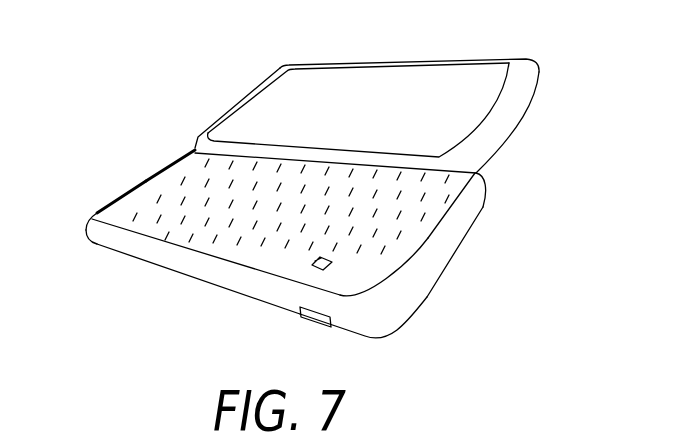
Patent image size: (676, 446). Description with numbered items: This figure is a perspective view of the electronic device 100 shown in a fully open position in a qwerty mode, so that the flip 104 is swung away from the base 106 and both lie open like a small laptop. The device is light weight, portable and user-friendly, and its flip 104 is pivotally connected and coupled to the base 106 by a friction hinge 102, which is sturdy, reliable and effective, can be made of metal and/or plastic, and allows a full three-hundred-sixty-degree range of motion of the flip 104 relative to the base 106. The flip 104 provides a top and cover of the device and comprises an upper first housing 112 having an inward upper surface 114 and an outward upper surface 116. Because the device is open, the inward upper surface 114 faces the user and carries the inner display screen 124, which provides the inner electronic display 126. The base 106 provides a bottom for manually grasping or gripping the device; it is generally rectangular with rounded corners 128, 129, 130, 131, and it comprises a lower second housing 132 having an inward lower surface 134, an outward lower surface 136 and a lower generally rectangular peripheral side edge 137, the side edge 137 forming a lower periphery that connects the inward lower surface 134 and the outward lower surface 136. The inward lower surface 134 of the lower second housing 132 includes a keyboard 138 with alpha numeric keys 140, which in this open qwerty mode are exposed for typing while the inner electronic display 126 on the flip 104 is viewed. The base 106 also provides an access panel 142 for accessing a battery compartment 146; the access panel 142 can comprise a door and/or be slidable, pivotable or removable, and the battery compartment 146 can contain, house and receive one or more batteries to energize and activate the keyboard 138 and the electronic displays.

The electronic device 100 is at (158, 45).
The friction hinge 102 is at (476, 173).
The flip 104 is at (443, 60).
The base 106 is at (120, 201).
The upper first housing 112 is at (279, 71).
The inward upper surface 114 is at (240, 97).
The outward upper surface 116 is at (526, 85).
The inner display screen 124 is at (353, 63).
The inner electronic display 126 is at (463, 118).
The rounded corner 128 is at (90, 226).
The rounded corner 129 is at (379, 336).
The rounded corner 130 is at (486, 191).
The rounded corner 131 is at (188, 152).
The lower second housing 132 is at (145, 263).
The inward lower surface 134 is at (393, 258).
The outward lower surface 136 is at (108, 240).
The lower peripheral side edge 137 is at (220, 258).
The keyboard 138 is at (311, 265).
The alpha numeric keys 140 is at (423, 220).
The access panel 142 is at (313, 319).
The battery compartment 146 is at (407, 297).